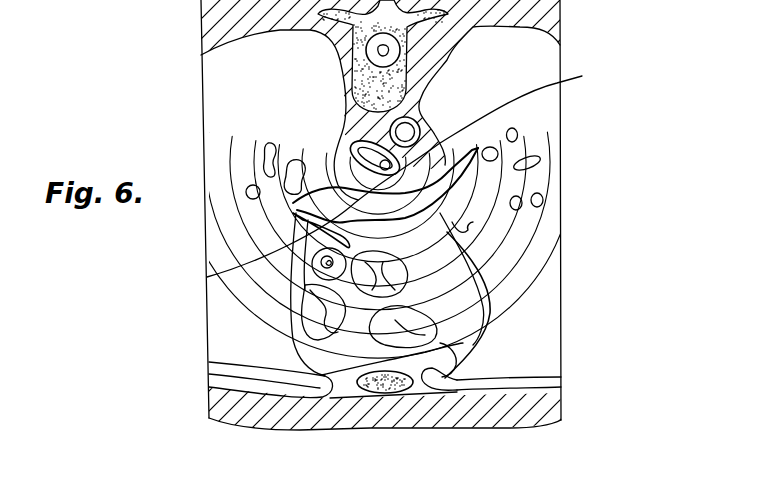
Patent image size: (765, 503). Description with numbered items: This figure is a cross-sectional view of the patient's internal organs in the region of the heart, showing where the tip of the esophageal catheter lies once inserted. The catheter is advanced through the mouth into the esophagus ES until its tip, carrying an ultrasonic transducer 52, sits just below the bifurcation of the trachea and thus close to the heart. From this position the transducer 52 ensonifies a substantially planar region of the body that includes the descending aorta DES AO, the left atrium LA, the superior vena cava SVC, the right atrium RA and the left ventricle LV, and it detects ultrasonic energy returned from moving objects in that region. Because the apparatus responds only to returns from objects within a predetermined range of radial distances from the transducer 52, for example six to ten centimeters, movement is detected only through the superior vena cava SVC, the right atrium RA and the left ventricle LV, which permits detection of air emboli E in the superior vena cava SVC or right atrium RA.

The esophagus ES is at (356, 143).
The descending aorta DES AO is at (421, 124).
The ultrasonic transducer 52 is at (404, 171).
The left atrium LA is at (445, 186).
The air emboli E is at (207, 277).
The superior vena cava SVC is at (298, 265).
The right atrium RA is at (296, 320).
The left ventricle LV is at (418, 312).